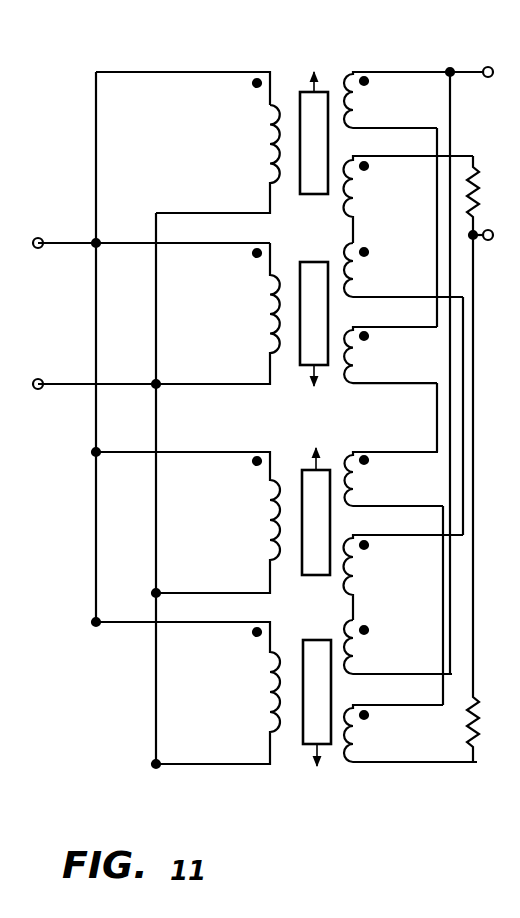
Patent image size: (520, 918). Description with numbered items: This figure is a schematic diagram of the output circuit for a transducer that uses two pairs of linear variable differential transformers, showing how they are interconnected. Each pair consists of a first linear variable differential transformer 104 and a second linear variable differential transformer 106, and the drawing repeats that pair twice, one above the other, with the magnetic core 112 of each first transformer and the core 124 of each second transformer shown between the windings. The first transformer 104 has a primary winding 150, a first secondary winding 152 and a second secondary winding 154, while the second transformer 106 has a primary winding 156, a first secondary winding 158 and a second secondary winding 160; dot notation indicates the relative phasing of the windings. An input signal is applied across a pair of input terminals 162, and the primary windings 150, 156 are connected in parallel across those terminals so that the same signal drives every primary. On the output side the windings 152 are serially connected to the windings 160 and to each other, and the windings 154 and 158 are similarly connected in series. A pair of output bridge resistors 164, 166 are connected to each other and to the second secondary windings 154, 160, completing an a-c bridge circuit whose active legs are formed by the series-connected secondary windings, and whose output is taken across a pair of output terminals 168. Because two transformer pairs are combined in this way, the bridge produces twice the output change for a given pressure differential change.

The first linear variable differential transformer 104 is at (281, 76).
The second linear variable differential transformer 106 is at (280, 388).
The magnetic core 112 is at (328, 150).
The magnetic core 124 is at (328, 320).
The primary winding 150 is at (270, 126).
The first secondary winding 152 is at (352, 101).
The second secondary winding 154 is at (352, 188).
The primary winding 156 is at (271, 318).
The first secondary winding 158 is at (352, 272).
The second secondary winding 160 is at (352, 356).
The input terminals 162 is at (42, 237).
The output bridge resistor 164 is at (473, 160).
The output bridge resistor 166 is at (465, 745).
The output terminals 168 is at (485, 66).